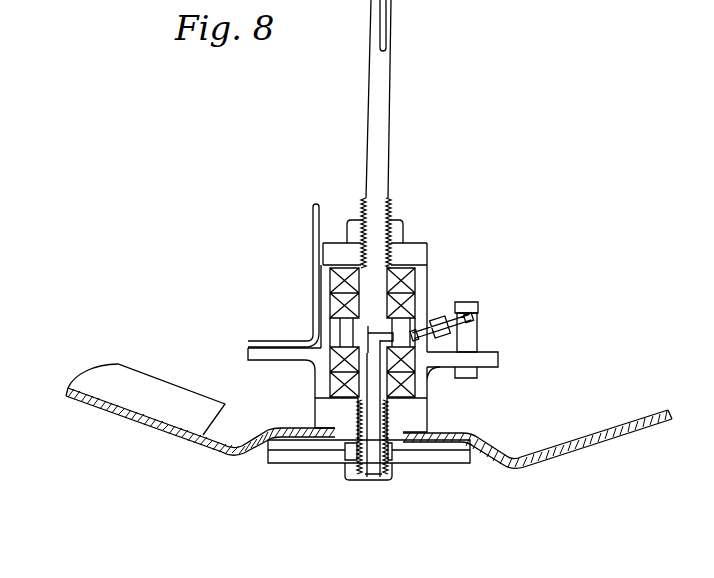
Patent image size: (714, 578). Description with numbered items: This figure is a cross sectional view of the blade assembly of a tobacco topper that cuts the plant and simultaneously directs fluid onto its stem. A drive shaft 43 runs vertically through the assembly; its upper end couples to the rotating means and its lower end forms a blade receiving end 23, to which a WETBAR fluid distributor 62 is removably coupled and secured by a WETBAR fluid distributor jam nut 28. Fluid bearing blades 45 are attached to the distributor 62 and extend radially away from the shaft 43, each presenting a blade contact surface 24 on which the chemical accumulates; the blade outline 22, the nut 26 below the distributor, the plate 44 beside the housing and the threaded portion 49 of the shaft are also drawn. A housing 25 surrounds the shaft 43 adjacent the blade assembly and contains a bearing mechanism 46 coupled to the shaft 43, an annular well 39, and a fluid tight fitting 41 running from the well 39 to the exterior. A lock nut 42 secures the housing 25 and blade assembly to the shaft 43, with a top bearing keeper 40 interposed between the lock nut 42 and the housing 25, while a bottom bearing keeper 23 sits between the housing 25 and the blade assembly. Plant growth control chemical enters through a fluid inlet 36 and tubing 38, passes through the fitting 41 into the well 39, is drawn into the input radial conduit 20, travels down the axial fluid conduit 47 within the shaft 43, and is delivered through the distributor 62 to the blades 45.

The input radial conduit 20 is at (385, 332).
The blade 22 is at (177, 389).
The blade receiving end 23 is at (327, 418).
The blade contact surface 24 is at (238, 447).
The housing 25 is at (311, 360).
The nut 26 is at (348, 478).
The WETBAR fluid distributor jam nut 28 is at (400, 470).
The fluid inlet 36 is at (480, 313).
The tubing 38 is at (478, 302).
The annular well 39 is at (337, 327).
The top bearing keeper 40 is at (428, 244).
The fluid tight fitting 41 is at (432, 316).
The lock nut 42 is at (403, 218).
The drive shaft 43 is at (378, 177).
The plate 44 is at (313, 213).
The fluid bearing blade 45 is at (104, 452).
The bearing mechanism 46 is at (338, 282).
The axial fluid conduit 47 is at (372, 478).
The threaded bolt 49 is at (353, 448).
The WETBAR fluid distributor 62 is at (467, 462).